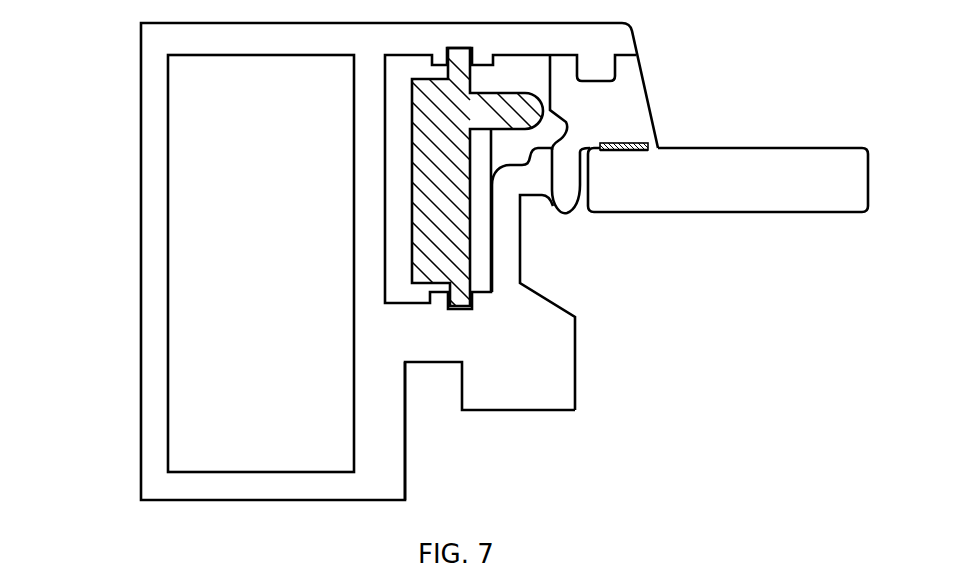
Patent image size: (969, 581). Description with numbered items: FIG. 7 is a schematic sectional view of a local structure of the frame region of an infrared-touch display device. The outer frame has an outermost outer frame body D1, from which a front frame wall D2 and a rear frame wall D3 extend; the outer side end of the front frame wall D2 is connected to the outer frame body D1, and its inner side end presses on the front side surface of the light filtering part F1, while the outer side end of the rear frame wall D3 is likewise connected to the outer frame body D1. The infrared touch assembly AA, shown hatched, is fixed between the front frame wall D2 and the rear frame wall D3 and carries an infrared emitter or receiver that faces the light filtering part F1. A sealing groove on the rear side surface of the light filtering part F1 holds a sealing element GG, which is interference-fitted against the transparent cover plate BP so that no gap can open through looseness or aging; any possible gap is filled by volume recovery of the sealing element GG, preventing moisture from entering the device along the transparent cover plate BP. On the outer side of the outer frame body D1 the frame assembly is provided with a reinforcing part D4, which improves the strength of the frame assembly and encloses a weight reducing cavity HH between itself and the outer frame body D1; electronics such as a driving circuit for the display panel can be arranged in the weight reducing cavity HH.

The infrared touch assembly AA is at (445, 180).
The transparent cover plate BP is at (728, 180).
The outer frame body D1 is at (472, 411).
The front frame wall D2 is at (501, 168).
The rear frame wall D3 is at (554, 279).
The reinforcing part D4 is at (150, 287).
The light filtering part F1 is at (588, 102).
The sealing element GG is at (632, 142).
The weight reducing cavity HH is at (188, 415).